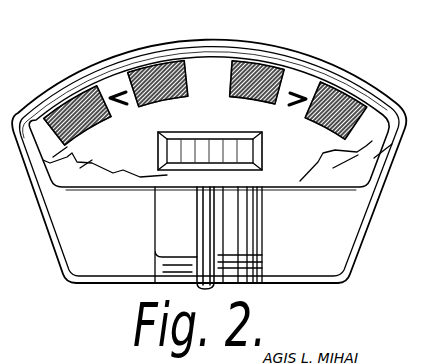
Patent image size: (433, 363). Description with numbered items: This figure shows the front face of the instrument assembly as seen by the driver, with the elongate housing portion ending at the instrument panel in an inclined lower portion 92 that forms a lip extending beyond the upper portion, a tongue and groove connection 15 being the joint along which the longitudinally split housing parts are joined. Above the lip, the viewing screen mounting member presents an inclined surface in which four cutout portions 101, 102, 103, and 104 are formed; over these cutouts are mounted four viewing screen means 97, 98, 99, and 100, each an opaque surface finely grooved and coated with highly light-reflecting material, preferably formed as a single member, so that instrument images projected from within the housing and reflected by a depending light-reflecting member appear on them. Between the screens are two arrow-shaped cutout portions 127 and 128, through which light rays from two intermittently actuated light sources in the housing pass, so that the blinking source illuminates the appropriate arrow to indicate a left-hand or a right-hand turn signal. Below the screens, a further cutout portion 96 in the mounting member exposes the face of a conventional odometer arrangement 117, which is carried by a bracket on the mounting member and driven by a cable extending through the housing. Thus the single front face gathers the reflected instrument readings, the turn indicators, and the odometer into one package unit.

The tongue and groove connection 15 is at (222, 228).
The lower portion 92 is at (124, 243).
The cutout portion 96 is at (160, 153).
The viewing screen means 97 is at (87, 90).
The viewing screen means 98 is at (177, 63).
The viewing screen means 99 is at (280, 68).
The viewing screen means 100 is at (362, 107).
The cutout portion 101 is at (50, 117).
The cutout portion 102 is at (139, 78).
The cutout portion 103 is at (234, 65).
The cutout portion 104 is at (327, 92).
The odometer arrangement 117 is at (262, 153).
The arrow-shaped cutout portion 127 is at (112, 96).
The arrow-shaped cutout portion 128 is at (304, 96).